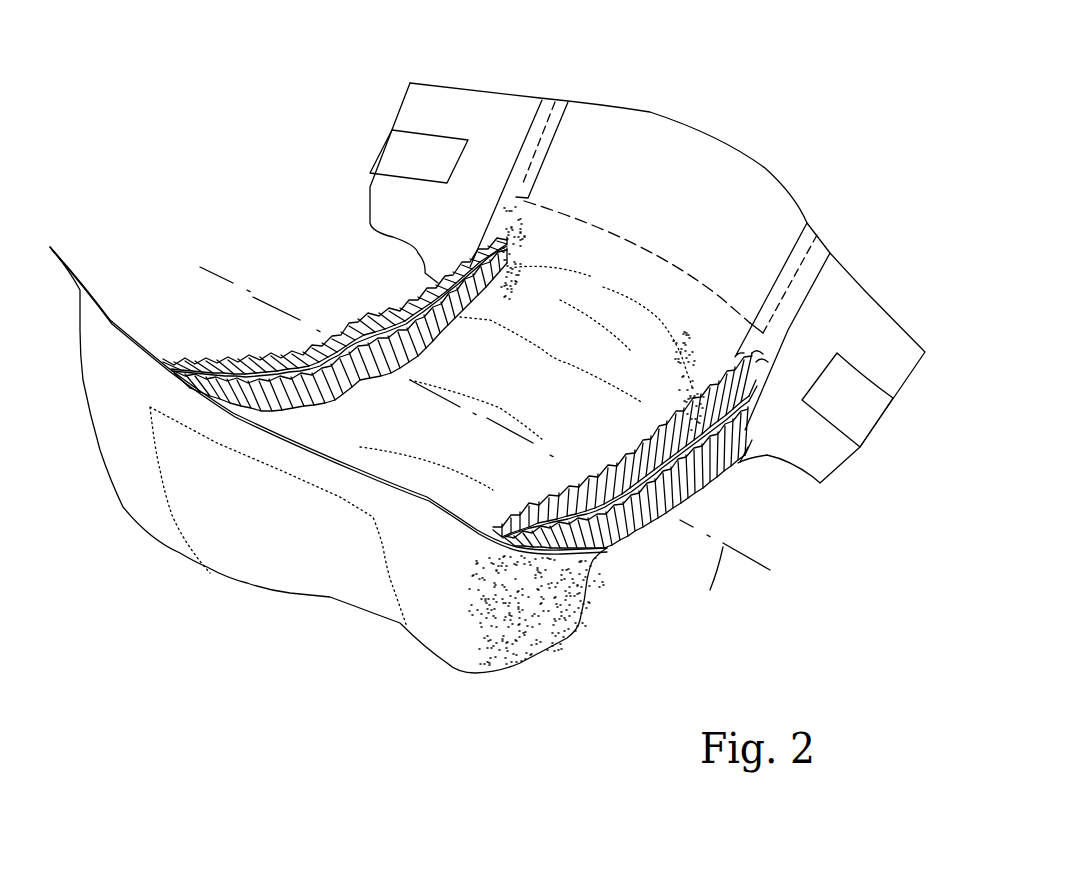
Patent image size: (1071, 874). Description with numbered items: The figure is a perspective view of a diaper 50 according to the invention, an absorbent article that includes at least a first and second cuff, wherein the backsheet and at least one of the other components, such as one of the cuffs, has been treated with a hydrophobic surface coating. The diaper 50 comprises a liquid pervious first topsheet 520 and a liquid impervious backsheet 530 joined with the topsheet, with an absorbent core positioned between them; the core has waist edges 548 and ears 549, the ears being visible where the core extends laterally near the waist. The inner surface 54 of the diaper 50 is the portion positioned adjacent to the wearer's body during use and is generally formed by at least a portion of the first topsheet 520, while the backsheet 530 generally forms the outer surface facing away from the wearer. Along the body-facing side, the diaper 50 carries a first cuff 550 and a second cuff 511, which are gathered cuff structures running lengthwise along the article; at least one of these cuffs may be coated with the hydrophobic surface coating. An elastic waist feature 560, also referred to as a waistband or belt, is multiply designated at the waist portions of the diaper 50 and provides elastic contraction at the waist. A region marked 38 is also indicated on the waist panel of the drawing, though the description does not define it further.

The diaper 50 is at (297, 203).
The back waist region 38 is at (678, 213).
The inner surface 54 is at (428, 164).
The first topsheet 520 is at (585, 138).
The waist edges 548 is at (612, 217).
The elastic waist feature 560 is at (118, 320).
The backsheet 530 is at (263, 545).
The ears 549 is at (517, 608).
The first cuff 550 is at (335, 324).
The second cuff 511 is at (405, 305).